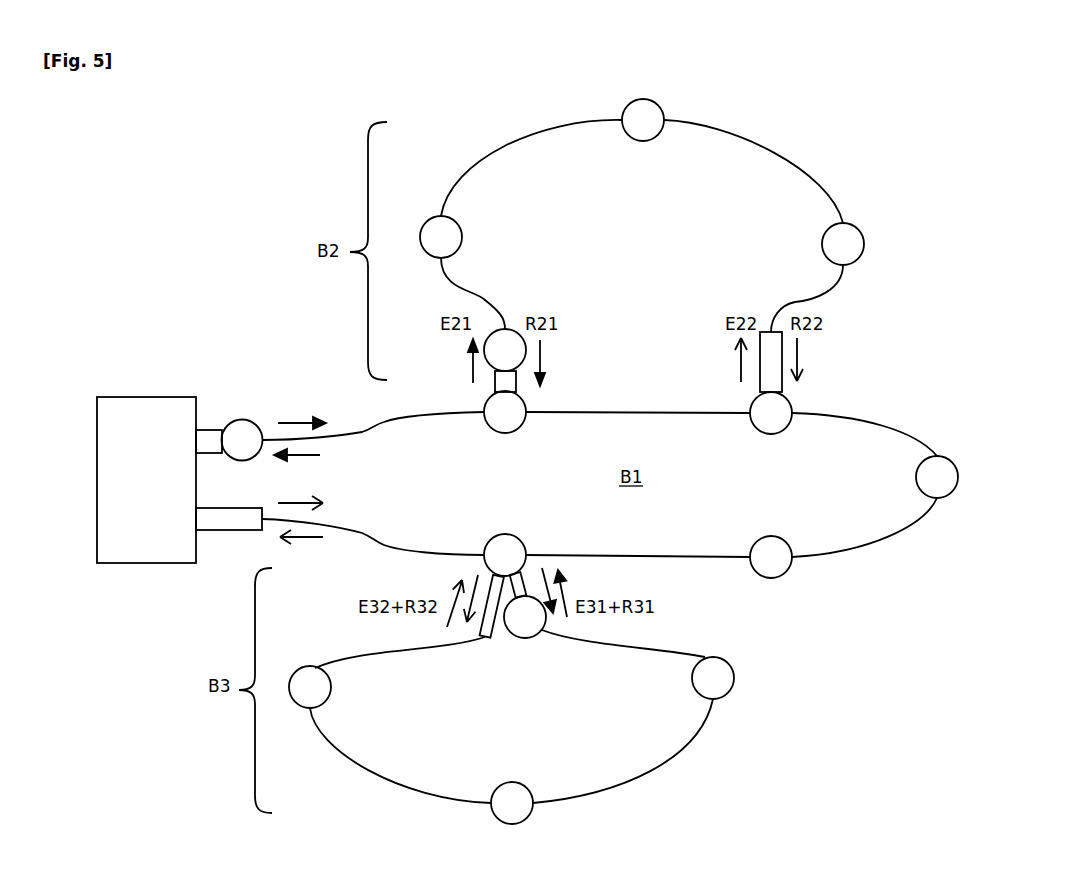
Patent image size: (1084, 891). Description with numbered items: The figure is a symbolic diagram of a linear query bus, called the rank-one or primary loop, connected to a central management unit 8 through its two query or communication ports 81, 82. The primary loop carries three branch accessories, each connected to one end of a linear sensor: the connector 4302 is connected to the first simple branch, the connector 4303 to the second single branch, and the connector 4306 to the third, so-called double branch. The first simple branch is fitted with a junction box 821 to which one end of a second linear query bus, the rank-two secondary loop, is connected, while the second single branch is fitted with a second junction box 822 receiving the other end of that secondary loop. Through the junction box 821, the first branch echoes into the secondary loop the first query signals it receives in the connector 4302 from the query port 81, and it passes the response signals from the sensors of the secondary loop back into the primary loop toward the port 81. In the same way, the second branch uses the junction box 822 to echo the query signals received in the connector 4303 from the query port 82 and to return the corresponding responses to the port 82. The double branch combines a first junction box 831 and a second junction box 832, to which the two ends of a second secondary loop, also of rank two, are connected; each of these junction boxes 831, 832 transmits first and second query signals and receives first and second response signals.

The central management unit 8 is at (146, 480).
The query port 81 is at (215, 440).
The query port 82 is at (214, 518).
The junction box 821 is at (496, 374).
The second junction box 822 is at (778, 375).
The first junction box 831 is at (555, 603).
The second junction box 832 is at (458, 603).
The connector 4302 is at (499, 424).
The connector 4303 is at (762, 424).
The connector 4306 is at (499, 541).